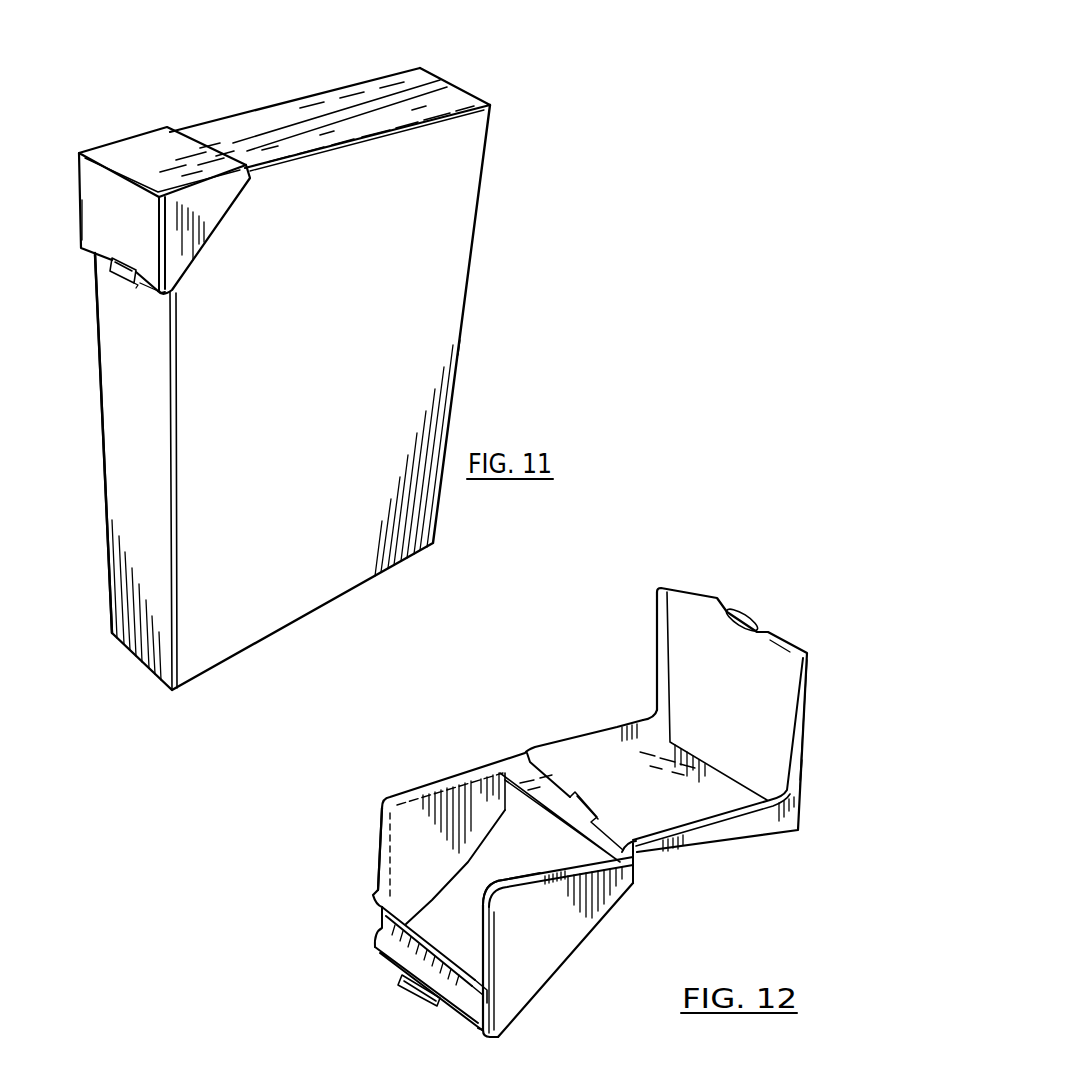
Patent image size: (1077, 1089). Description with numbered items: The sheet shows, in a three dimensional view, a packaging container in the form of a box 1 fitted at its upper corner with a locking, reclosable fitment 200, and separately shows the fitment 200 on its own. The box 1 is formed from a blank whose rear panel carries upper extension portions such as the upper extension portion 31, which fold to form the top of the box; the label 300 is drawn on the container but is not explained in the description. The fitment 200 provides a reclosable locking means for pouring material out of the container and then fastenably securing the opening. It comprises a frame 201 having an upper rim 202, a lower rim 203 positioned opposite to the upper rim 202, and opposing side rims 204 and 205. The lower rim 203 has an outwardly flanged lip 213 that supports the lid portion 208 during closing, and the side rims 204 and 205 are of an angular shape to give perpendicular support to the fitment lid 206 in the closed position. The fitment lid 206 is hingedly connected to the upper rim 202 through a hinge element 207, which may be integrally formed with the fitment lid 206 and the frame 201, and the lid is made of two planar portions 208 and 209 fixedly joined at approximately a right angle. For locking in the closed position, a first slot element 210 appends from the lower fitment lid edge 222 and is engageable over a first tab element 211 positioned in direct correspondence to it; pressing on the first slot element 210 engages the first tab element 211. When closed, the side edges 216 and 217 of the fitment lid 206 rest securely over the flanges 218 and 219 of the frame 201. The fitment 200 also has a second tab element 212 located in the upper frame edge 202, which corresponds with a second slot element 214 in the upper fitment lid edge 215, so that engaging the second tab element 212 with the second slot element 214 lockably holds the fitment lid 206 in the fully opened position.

In FIG. 11, the box 1 is at (470, 347).
In FIG. 11, the upper extension portion 31 is at (443, 80).
In FIG. 11, the article 300 is at (447, 63).
In FIG. 11, the locking, reclosable fitment 200 is at (172, 358).
In FIG. 12, the locking, reclosable fitment 200 is at (569, 794).
In FIG. 12, the frame 201 is at (378, 950).
In FIG. 12, the upper rim 202 is at (603, 840).
In FIG. 12, the lower rim 203 is at (463, 993).
In FIG. 12, the side rim 204 is at (424, 840).
In FIG. 12, the side rim 205 is at (545, 953).
In FIG. 11, the fitment lid 206 is at (147, 292).
In FIG. 12, the fitment lid 206 is at (813, 683).
In FIG. 11, the hinge element 207 is at (245, 158).
In FIG. 12, the hinge element 207 is at (633, 848).
In FIG. 11, the planar portion 208 is at (97, 215).
In FIG. 12, the planar portion 208 is at (720, 720).
In FIG. 11, the planar portion 209 is at (162, 148).
In FIG. 12, the planar portion 209 is at (652, 755).
In FIG. 11, the first slot element 210 is at (126, 288).
In FIG. 12, the first slot element 210 is at (725, 600).
In FIG. 11, the first tab element 211 is at (130, 284).
In FIG. 12, the first tab element 211 is at (412, 993).
In FIG. 12, the second tab element 212 is at (577, 812).
In FIG. 12, the outwardly flanged lip 213 is at (473, 1030).
In FIG. 12, the second slot element 214 is at (587, 803).
In FIG. 12, the upper fitment lid edge 215 is at (553, 785).
In FIG. 12, the side edge 216 is at (797, 757).
In FIG. 12, the side edge 217 is at (668, 622).
In FIG. 12, the flange 218 is at (527, 886).
In FIG. 12, the flange 219 is at (453, 780).
In FIG. 12, the lower fitment lid edge 222 is at (783, 650).